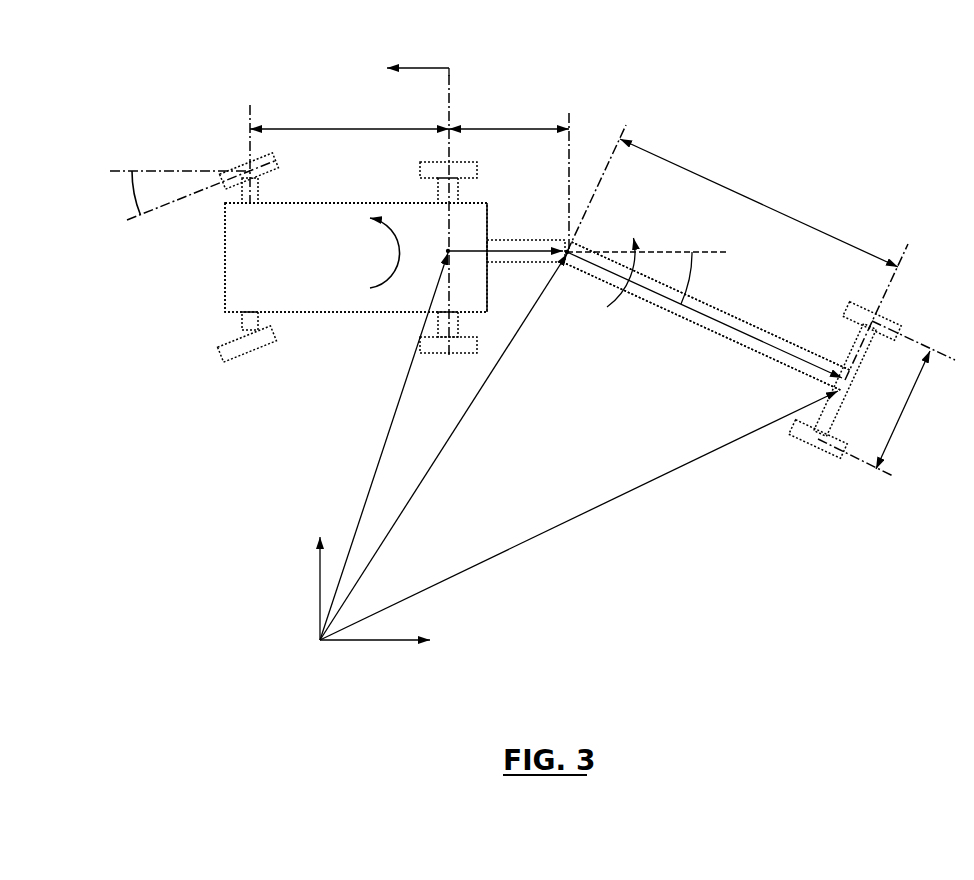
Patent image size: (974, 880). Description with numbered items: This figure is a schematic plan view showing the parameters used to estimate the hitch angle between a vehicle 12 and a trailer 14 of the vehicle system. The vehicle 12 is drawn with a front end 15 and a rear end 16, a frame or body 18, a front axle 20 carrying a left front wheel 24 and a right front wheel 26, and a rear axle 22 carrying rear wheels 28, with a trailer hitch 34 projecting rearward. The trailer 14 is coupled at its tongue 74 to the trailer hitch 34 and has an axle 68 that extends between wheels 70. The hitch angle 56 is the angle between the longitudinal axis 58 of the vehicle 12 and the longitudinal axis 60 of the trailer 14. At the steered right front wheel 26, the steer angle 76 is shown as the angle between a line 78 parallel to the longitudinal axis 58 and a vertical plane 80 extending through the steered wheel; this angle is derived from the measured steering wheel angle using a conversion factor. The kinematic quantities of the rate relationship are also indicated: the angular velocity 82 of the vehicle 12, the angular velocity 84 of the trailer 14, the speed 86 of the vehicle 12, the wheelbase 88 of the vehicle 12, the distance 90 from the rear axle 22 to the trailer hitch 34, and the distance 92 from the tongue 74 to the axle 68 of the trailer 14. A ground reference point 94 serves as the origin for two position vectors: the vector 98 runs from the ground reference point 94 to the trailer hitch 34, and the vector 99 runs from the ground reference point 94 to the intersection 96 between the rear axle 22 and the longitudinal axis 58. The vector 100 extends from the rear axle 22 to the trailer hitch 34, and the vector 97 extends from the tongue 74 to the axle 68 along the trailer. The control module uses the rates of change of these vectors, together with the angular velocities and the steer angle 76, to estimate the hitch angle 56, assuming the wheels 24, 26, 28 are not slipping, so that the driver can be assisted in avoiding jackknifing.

The vehicle 12 is at (283, 397).
The trailer 14 is at (628, 428).
The front end 15 is at (224, 257).
The rear end 16 is at (487, 290).
The frame or body 18 is at (317, 205).
The front axle 20 is at (240, 324).
The rear axle 22 is at (458, 192).
The left front wheel 24 is at (255, 352).
The right front wheel 26 is at (243, 166).
The rear wheels 28 is at (465, 160).
The trailer hitch 34 is at (560, 243).
The hitch angle 56 is at (700, 283).
The longitudinal axis of the vehicle 58 is at (665, 255).
The longitudinal axis of the trailer 60 is at (663, 300).
The axle 68 is at (840, 423).
The wheels 70 is at (890, 318).
The tongue 74 is at (578, 248).
The steer angle 76 is at (127, 187).
The line parallel to the longitudinal axis 78 is at (180, 170).
The vertical plane through steered wheel 80 is at (163, 205).
The angular velocity of the vehicle 82 is at (390, 242).
The angular velocity of the trailer 84 is at (617, 297).
The speed of the vehicle 86 is at (422, 63).
The wheelbase of the vehicle 88 is at (357, 127).
The distance from rear axle to trailer hitch 90 is at (508, 128).
The distance from tongue to trailer axle 92 is at (758, 205).
The ground reference point 94 is at (316, 640).
The intersection between rear axle and longitudinal axis 96 is at (445, 250).
The vector Z 97 is at (744, 337).
The vector r 98 is at (432, 478).
The vector P 99 is at (380, 455).
The vector n 100 is at (528, 250).